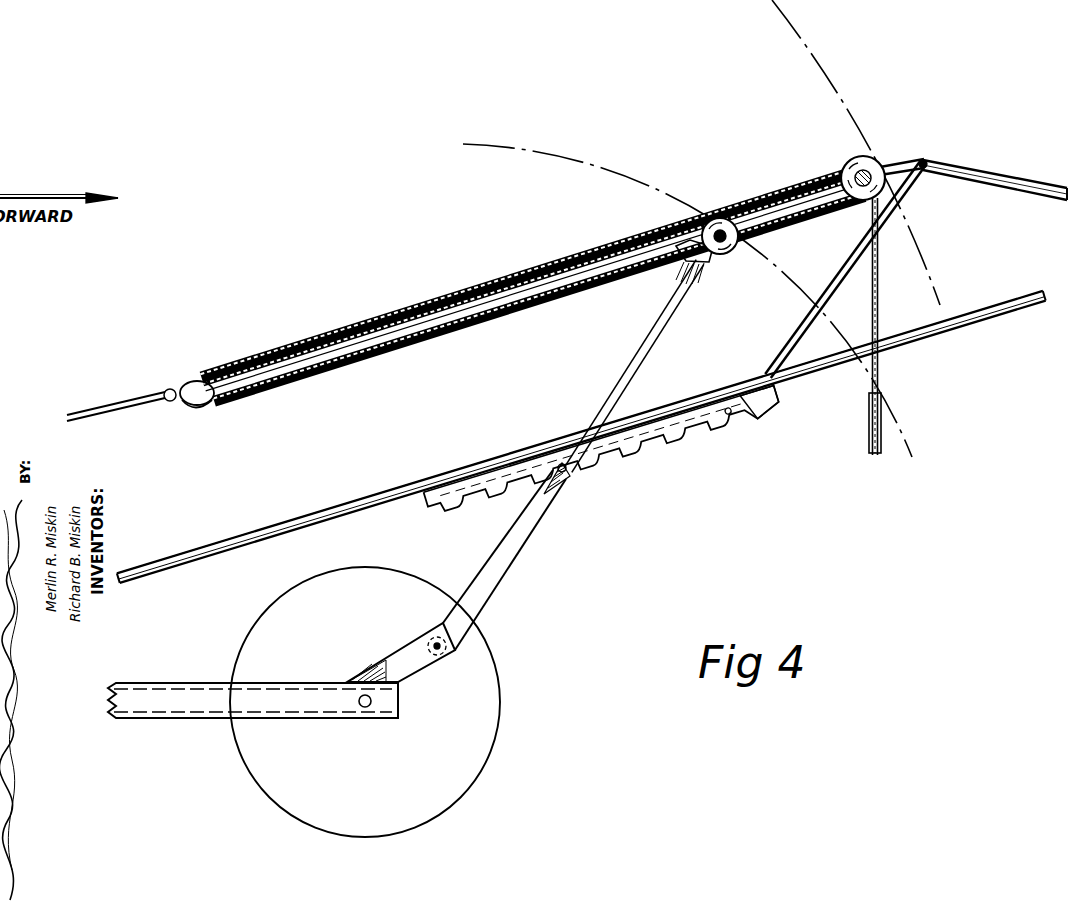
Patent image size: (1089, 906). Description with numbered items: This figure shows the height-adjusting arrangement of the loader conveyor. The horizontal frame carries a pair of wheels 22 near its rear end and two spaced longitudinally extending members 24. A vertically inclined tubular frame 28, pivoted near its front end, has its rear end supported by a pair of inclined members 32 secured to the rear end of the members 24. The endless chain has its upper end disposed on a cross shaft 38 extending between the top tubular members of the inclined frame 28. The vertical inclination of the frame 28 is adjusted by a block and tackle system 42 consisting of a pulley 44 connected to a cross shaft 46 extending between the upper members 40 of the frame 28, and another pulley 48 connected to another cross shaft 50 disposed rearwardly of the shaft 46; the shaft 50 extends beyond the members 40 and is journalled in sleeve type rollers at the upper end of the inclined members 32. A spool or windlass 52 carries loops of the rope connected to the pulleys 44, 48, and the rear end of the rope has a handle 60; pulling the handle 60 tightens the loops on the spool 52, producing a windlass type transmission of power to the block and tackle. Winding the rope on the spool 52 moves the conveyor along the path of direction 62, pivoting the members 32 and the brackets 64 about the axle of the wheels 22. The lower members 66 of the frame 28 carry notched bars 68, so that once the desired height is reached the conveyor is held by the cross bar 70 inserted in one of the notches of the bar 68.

The wheels 22 is at (488, 658).
The longitudinally extending members 24 is at (157, 683).
The vertically inclined tubular frame 28 is at (990, 172).
The inclined members 32 is at (500, 563).
The cross shaft 38 is at (925, 160).
The upper members 40 is at (892, 166).
The block and tackle system 42 is at (452, 296).
The pulley 44 is at (193, 384).
The cross shaft 46 is at (150, 392).
The pulley 48 is at (703, 264).
The cross shaft 50 is at (738, 238).
The spool or windlass 52 is at (851, 162).
The handle 60 is at (868, 450).
The path of direction 62 is at (826, 74).
The brackets 64 is at (366, 672).
The lower members 66 is at (953, 328).
The notched bars 68 is at (661, 434).
The cross bar 70 is at (566, 472).